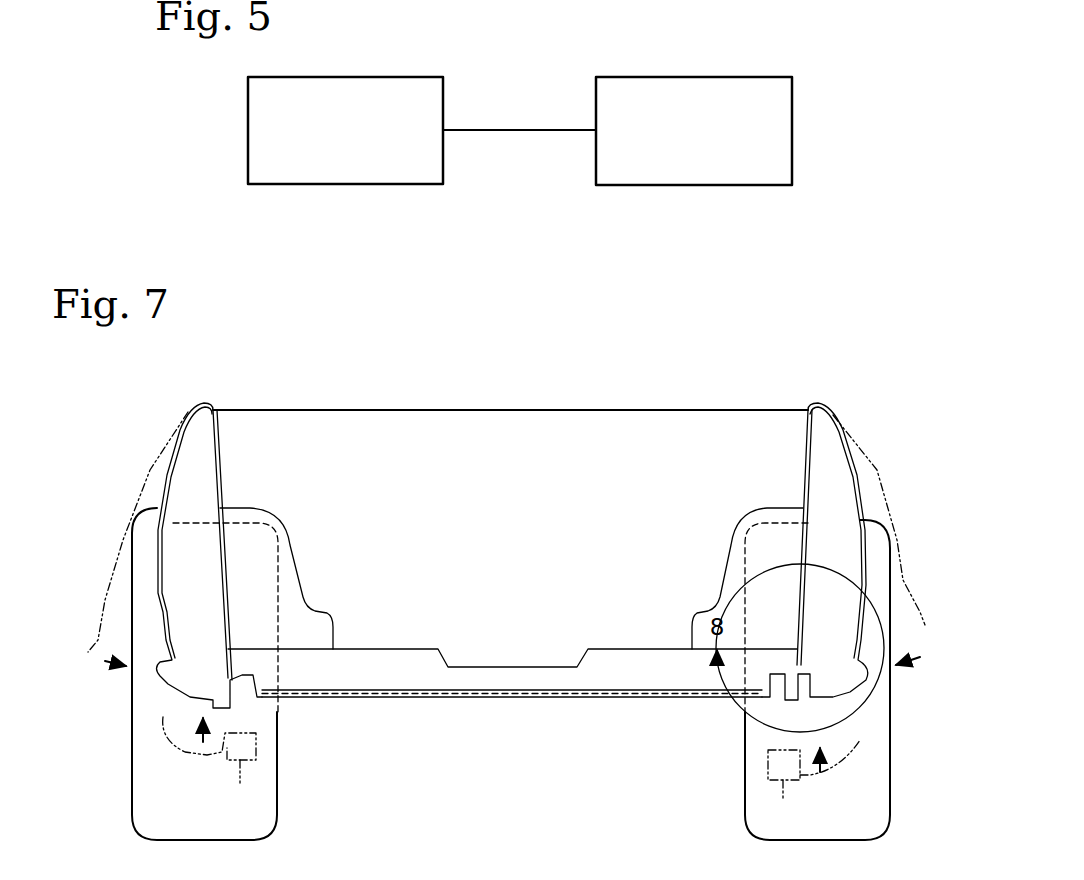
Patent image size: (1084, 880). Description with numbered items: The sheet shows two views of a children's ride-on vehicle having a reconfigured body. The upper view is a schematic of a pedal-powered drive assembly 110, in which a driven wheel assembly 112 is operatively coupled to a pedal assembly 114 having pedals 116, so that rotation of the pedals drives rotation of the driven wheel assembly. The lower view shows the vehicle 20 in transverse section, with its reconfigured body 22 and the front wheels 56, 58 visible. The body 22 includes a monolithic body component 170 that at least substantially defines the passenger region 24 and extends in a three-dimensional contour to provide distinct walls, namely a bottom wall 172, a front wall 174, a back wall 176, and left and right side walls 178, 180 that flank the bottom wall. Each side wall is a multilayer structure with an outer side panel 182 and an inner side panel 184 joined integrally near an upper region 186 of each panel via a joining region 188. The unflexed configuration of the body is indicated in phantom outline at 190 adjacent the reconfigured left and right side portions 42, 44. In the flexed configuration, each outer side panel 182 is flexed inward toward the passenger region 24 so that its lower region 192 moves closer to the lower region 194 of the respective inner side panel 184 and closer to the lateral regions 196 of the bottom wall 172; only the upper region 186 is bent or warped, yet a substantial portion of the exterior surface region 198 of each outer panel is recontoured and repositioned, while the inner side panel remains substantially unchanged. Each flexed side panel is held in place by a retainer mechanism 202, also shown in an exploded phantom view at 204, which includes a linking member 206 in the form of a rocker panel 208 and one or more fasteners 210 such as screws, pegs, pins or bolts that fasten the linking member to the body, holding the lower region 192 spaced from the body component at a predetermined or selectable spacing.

In FIG. 5, the pedal-powered drive assembly 110 is at (366, 56).
In FIG. 5, the driven wheel assembly 112 is at (673, 65).
In FIG. 5, the pedal assembly 114 is at (247, 131).
In FIG. 5, the pedals 116 is at (315, 185).
In FIG. 7, the vehicle 20 is at (277, 330).
In FIG. 7, the reconfigured body 22 is at (135, 378).
In FIG. 7, the passenger region 24 is at (507, 433).
In FIG. 7, the left side portion 42 is at (151, 471).
In FIG. 7, the right side portion 44 is at (873, 478).
In FIG. 7, the front wheel 56 is at (132, 790).
In FIG. 7, the front wheel 58 is at (890, 768).
In FIG. 7, the body component 170 is at (203, 404).
In FIG. 7, the bottom wall 172 is at (450, 697).
In FIG. 7, the front wall 174 is at (397, 428).
In FIG. 7, the back wall 176 is at (667, 425).
In FIG. 7, the left side wall 178 is at (227, 452).
In FIG. 7, the right side wall 180 is at (794, 461).
In FIG. 7, the outer side panel 182 is at (157, 507).
In FIG. 7, the inner side panel 184 is at (220, 476).
In FIG. 7, the upper region 186 is at (210, 433).
In FIG. 7, the joining region 188 is at (207, 412).
In FIG. 7, the unflexed configuration 190 is at (111, 586).
In FIG. 7, the lower region 192 is at (163, 648).
In FIG. 7, the lower region 194 is at (232, 655).
In FIG. 7, the lateral regions 196 is at (240, 688).
In FIG. 7, the exterior surface region 198 is at (160, 543).
In FIG. 7, the retainer mechanism 202 is at (151, 709).
In FIG. 7, the retainer mechanism exploded view 204 is at (200, 794).
In FIG. 7, the linking member 206 is at (181, 679).
In FIG. 7, the rocker panel 208 is at (207, 695).
In FIG. 7, the fasteners 210 is at (240, 692).